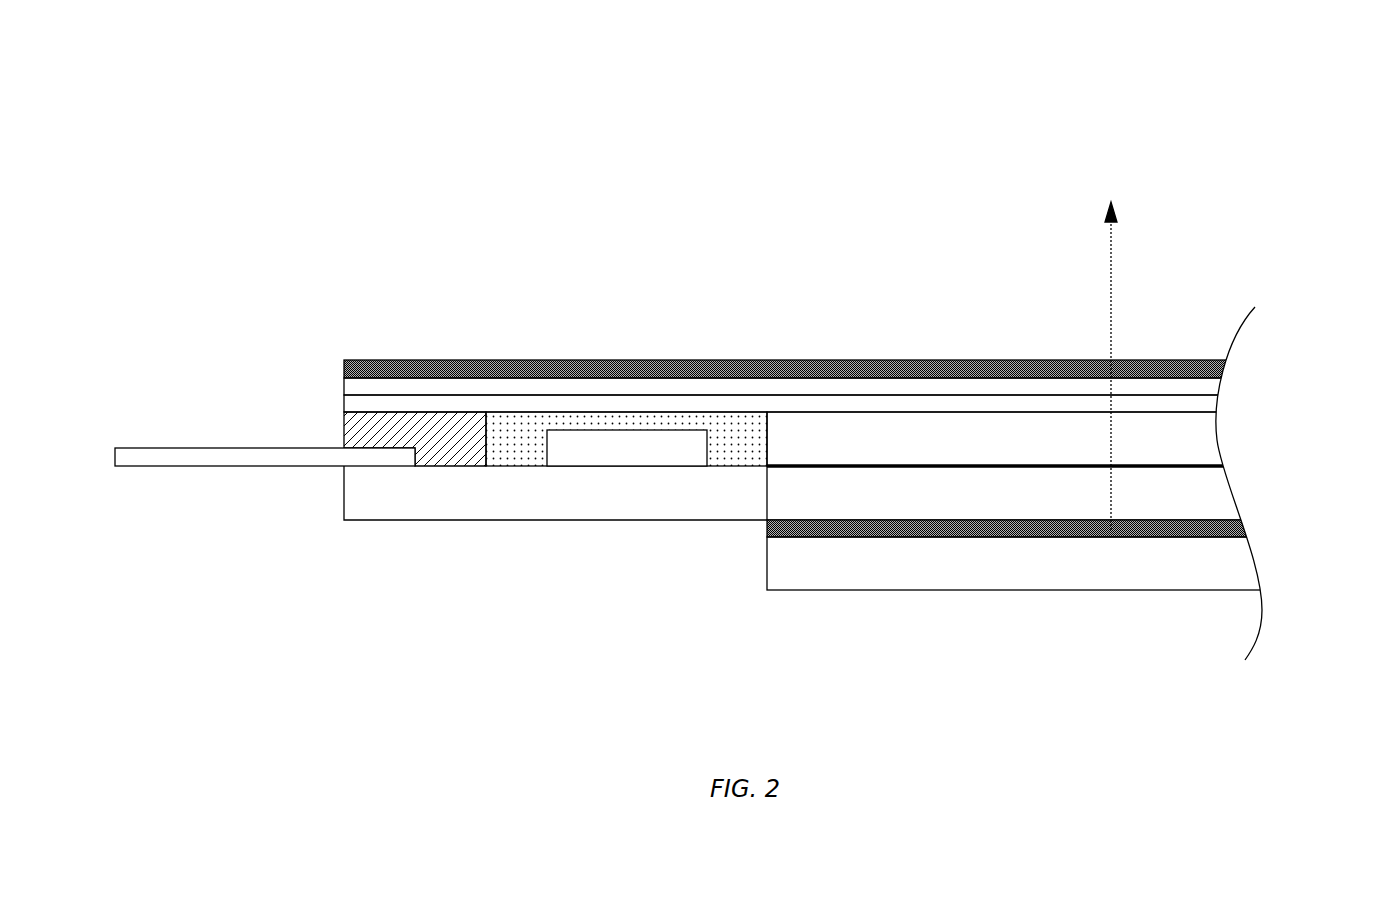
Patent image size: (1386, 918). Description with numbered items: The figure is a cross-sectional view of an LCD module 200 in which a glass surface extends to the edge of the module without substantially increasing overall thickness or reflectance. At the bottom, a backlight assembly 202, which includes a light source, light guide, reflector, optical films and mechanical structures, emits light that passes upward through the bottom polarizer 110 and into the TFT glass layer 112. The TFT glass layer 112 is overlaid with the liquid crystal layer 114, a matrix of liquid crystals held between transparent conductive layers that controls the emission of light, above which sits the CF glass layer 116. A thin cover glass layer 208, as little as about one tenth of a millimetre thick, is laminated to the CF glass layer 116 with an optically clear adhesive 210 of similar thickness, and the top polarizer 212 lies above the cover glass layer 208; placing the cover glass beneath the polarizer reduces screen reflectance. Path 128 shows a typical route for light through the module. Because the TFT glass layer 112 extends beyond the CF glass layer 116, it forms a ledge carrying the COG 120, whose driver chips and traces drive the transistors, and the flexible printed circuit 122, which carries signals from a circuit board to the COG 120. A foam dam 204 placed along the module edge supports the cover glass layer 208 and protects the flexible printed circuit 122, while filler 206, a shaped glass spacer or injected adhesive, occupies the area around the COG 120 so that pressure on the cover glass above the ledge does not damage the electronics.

The LCD module 200 is at (337, 133).
The top polarizer 212 is at (820, 360).
The cover glass layer 208 is at (343, 385).
The optically clear adhesive 210 is at (343, 403).
The foam dam 204 is at (343, 432).
The filler 206 is at (529, 428).
The COG 120 is at (628, 430).
The CF glass layer 116 is at (1217, 440).
The liquid crystal layer 114 is at (1222, 467).
The TFT glass layer 112 is at (343, 492).
The flexible printed circuit 122 is at (257, 466).
The bottom polarizer 110 is at (767, 528).
The backlight assembly 202 is at (767, 563).
The path 128 is at (1110, 252).